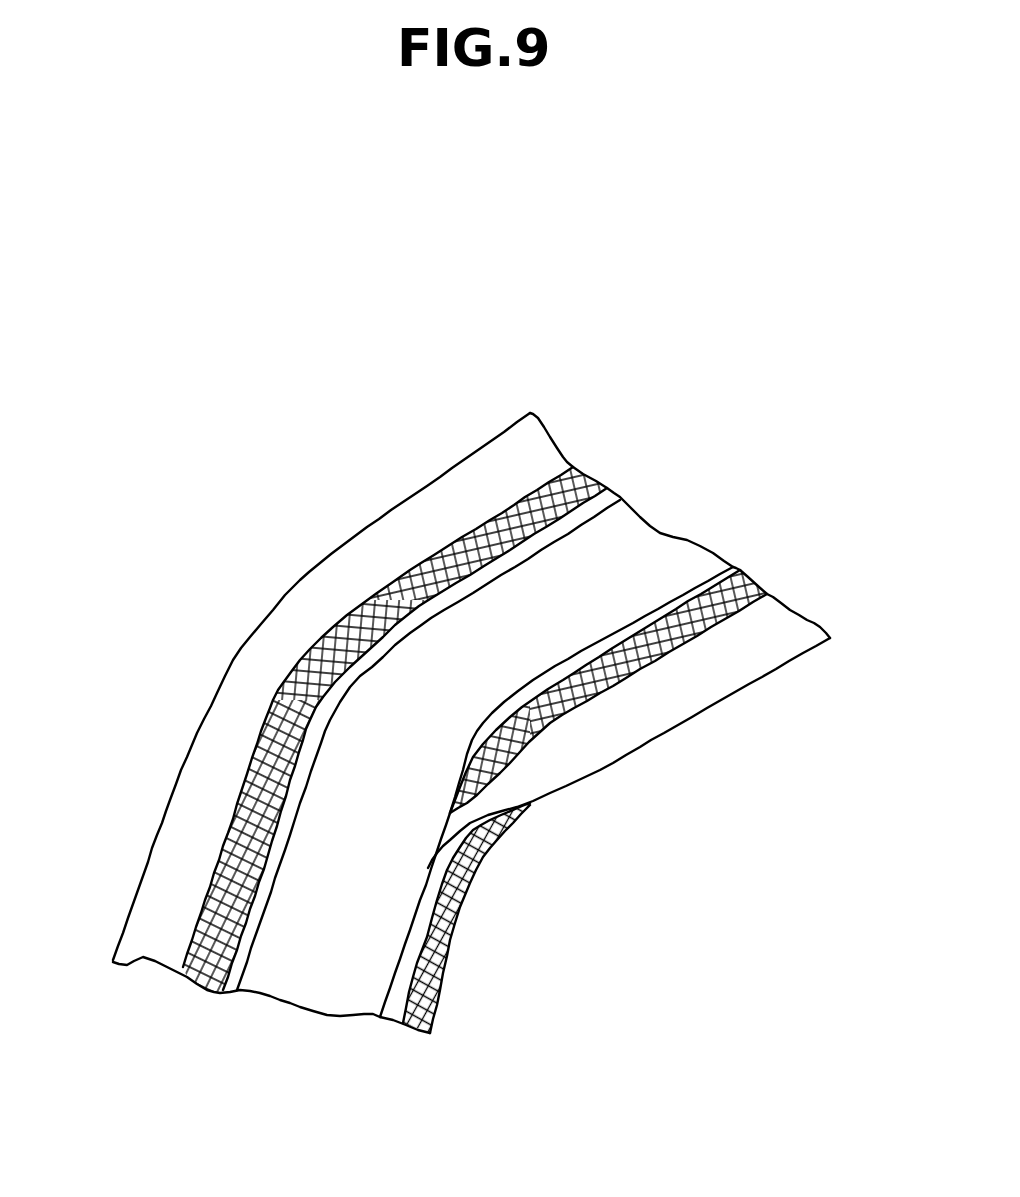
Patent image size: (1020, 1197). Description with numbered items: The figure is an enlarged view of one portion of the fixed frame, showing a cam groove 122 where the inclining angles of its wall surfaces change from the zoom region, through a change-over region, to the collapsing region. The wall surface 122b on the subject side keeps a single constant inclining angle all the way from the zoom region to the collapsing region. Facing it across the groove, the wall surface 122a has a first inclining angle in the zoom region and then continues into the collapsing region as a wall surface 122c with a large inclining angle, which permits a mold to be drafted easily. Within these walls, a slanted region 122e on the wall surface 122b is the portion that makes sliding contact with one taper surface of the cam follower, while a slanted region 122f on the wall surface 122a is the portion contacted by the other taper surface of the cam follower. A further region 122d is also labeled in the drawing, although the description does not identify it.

The cam groove 122 is at (228, 560).
The wall surface 122a is at (408, 948).
The wall surface on a subject side 122b is at (397, 540).
The wall surface 122c is at (673, 688).
The intermediate plate layer 122d is at (610, 573).
The slanted region 122e is at (513, 517).
The slanted region 122f is at (452, 900).